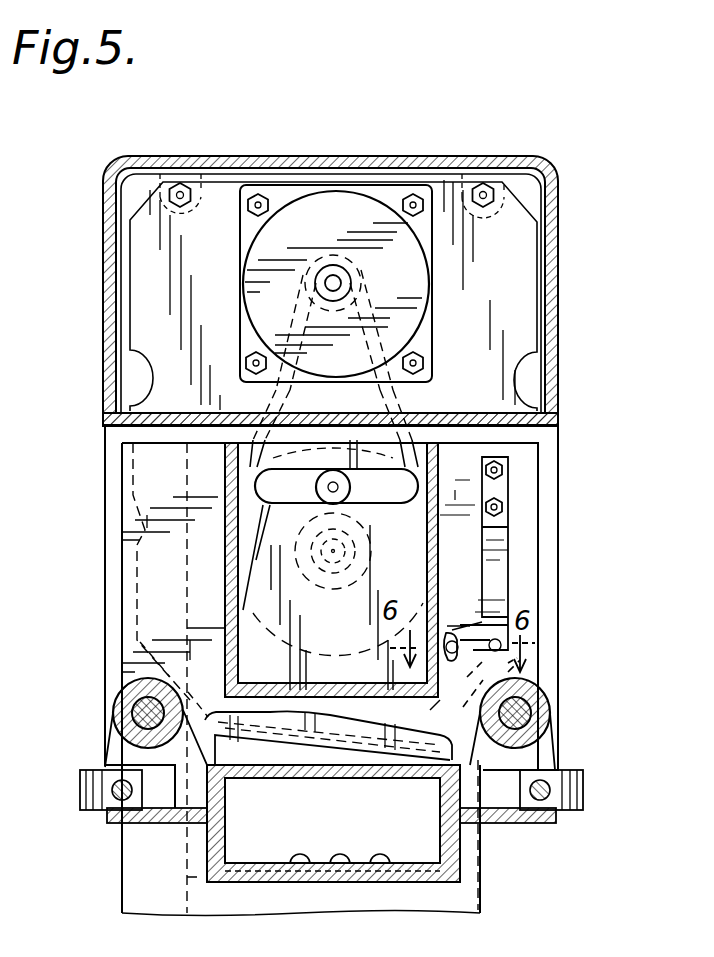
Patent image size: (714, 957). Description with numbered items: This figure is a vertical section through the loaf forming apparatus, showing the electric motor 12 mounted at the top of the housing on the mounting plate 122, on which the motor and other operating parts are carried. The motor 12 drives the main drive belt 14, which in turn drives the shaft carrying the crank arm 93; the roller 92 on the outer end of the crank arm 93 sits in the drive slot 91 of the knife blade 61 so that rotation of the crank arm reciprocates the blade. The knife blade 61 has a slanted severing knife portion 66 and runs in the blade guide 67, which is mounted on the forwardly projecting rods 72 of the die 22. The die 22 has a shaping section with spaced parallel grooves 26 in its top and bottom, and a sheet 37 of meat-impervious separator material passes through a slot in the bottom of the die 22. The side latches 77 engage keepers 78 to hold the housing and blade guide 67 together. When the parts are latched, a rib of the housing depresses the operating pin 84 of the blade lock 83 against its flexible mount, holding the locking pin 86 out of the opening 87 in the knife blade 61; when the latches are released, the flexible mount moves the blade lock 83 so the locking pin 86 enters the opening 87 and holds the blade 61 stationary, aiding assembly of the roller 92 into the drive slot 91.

The electric motor 12 is at (322, 236).
The main drive belt 14 is at (420, 395).
The die 22 is at (222, 832).
The groove 26 is at (290, 864).
The sheet 37 is at (366, 864).
The knife blade 61 is at (410, 574).
The severing knife portion 66 is at (270, 742).
The blade guide 67 is at (525, 528).
The forwardly projecting rods 72 is at (113, 712).
The side latches 77 is at (80, 790).
The keeper 78 is at (110, 812).
The blade lock 83 is at (500, 570).
The operating pin 84 is at (481, 683).
The locking pin 86 is at (450, 640).
The opening 87 is at (440, 700).
The drive slot 91 is at (280, 505).
The roller 92 is at (352, 488).
The crank arm 93 is at (350, 508).
The mounting plate 122 is at (500, 292).